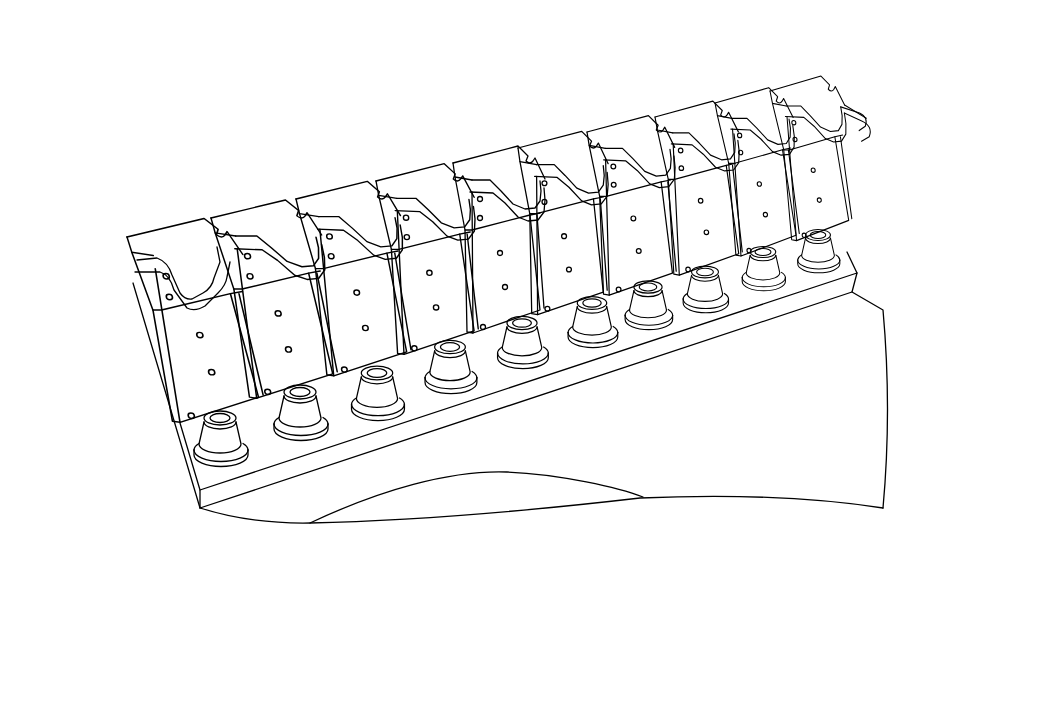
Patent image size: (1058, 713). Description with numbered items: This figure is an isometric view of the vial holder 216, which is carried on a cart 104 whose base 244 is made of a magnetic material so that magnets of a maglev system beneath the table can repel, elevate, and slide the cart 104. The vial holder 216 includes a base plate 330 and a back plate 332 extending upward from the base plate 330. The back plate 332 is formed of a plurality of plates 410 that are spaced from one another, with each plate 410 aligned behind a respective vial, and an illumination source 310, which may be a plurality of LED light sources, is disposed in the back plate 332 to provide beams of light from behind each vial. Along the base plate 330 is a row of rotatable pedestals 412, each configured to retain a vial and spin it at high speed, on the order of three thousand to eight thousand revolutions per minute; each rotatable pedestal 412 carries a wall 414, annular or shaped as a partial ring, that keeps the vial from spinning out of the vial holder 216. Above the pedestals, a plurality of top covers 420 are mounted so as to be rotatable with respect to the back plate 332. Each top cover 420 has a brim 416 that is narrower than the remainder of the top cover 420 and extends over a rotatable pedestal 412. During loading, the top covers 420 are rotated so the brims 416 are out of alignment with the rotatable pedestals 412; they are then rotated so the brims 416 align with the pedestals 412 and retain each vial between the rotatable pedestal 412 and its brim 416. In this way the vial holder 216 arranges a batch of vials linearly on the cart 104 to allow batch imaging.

The cart 104 is at (168, 151).
The vial holder 216 is at (460, 89).
The base 244 is at (743, 470).
The illumination source 310 is at (278, 320).
The base plate 330 is at (203, 474).
The back plate 332 is at (125, 370).
The plate 410 is at (173, 332).
The rotatable pedestal 412 is at (457, 375).
The wall 414 is at (592, 322).
The brim 416 is at (196, 268).
The top cover 420 is at (152, 238).